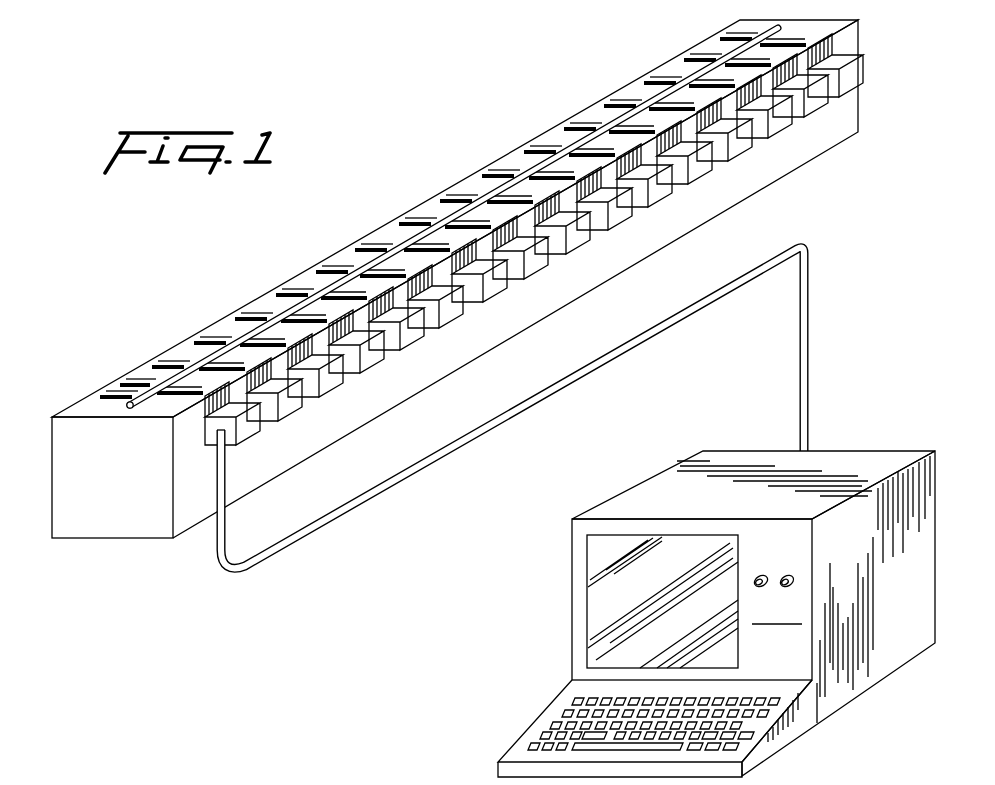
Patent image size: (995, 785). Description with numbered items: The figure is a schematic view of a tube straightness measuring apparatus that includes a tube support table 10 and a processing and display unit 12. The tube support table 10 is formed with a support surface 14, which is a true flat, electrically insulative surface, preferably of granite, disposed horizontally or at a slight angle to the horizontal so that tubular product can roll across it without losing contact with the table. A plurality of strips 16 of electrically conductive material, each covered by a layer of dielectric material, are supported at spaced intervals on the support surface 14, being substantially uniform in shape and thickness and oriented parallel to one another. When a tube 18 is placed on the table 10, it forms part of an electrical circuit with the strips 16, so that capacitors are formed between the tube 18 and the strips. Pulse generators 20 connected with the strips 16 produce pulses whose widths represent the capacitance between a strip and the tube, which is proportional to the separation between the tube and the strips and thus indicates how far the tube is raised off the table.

The tube support table 10 is at (451, 307).
The processing and display unit 12 is at (918, 568).
The support surface 14 is at (87, 410).
The strips 16 is at (325, 268).
The tube 18 is at (189, 370).
The pulse generators 20 is at (290, 402).